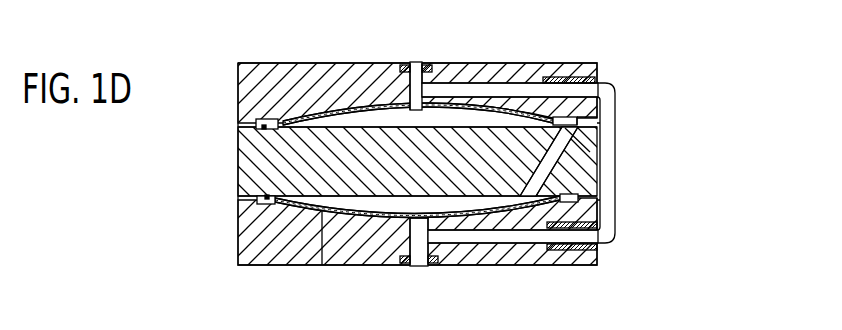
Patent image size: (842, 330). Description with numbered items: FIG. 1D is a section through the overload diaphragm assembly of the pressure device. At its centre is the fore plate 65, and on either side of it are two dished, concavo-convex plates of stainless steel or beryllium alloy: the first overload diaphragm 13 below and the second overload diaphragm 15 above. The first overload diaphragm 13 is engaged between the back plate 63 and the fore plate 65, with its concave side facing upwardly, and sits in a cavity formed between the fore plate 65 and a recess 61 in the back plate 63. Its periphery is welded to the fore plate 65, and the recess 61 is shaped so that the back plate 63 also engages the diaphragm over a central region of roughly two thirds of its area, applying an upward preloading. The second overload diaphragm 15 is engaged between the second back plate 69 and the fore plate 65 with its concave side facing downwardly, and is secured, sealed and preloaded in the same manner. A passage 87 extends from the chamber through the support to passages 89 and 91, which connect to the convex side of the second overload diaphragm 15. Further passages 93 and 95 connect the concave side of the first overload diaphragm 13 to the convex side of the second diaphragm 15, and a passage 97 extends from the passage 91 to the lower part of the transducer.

The first overload diaphragm 13 is at (322, 260).
The second overload diaphragm 15 is at (322, 112).
The recess 61 is at (398, 204).
The back plate 63 is at (263, 255).
The fore plate 65 is at (253, 160).
The second back plate 69 is at (237, 89).
The passage 87 is at (420, 250).
The passage 89 is at (502, 237).
The passage 91 is at (610, 122).
The passage 93 is at (509, 110).
The passage 95 is at (550, 160).
The passage 97 is at (413, 63).